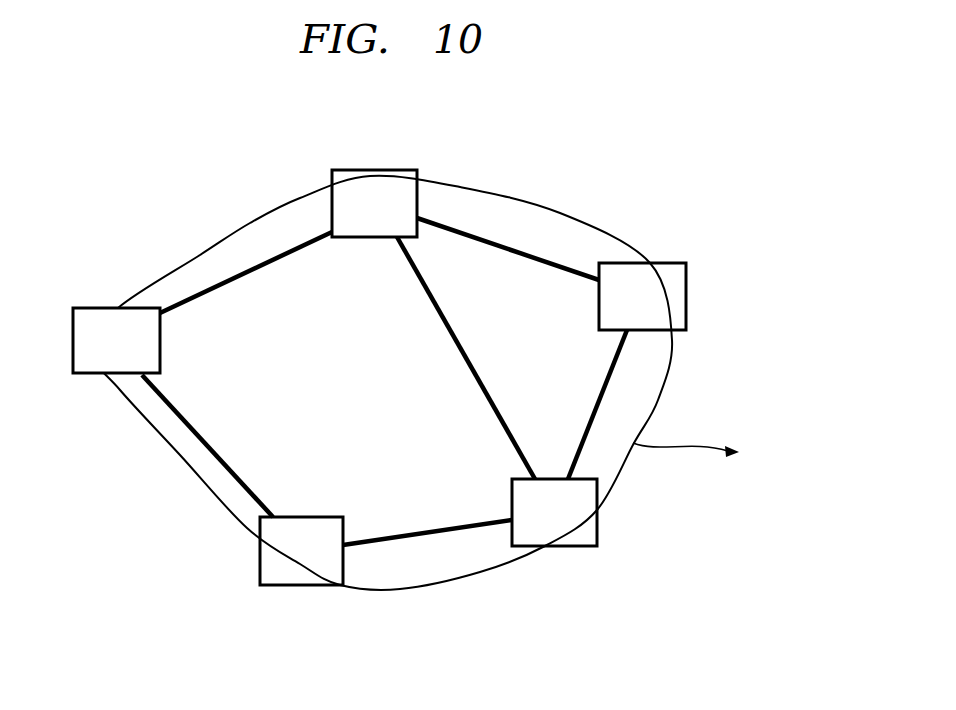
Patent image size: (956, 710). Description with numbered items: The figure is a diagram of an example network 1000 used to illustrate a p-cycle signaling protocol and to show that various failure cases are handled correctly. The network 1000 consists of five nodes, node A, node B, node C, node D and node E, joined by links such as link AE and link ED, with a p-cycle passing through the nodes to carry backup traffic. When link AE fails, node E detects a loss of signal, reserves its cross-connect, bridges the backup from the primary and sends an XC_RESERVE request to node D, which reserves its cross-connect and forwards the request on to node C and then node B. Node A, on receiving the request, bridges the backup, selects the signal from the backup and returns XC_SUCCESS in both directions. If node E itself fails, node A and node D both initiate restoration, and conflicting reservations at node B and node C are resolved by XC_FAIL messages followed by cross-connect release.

The example network 1000 is at (457, 348).
The node A is at (116, 340).
The node B is at (374, 203).
The node C is at (642, 296).
The node D is at (554, 512).
The node E is at (301, 551).